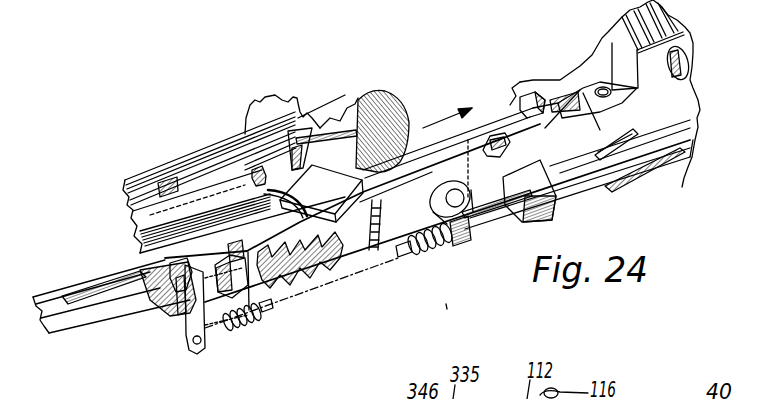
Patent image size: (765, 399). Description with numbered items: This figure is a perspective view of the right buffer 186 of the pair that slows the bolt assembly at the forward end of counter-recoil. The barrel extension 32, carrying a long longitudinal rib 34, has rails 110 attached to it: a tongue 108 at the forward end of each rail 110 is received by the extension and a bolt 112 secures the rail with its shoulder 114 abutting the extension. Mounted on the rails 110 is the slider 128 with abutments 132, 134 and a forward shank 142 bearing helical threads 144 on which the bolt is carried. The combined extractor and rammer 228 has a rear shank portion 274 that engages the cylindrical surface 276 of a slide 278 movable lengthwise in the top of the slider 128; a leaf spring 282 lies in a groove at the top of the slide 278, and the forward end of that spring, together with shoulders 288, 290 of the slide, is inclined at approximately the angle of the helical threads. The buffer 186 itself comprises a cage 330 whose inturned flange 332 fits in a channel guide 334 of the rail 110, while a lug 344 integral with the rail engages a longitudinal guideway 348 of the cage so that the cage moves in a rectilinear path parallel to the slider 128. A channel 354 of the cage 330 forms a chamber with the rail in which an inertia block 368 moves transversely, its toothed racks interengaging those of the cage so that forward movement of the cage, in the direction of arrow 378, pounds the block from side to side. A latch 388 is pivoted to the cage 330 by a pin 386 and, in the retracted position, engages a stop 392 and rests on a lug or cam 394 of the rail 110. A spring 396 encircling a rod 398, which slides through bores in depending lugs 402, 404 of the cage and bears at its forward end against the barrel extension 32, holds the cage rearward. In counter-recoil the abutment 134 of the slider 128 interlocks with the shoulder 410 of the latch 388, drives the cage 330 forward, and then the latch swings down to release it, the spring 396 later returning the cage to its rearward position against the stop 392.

The barrel extension 32 is at (683, 115).
The long longitudinal rib 34 is at (690, 163).
The tongue 108 is at (622, 153).
The rail 110 is at (70, 290).
The bolt 112 is at (603, 113).
The shoulder 114 is at (638, 127).
The slider 128 is at (143, 219).
The abutment 132 is at (296, 99).
The abutment 134 is at (321, 193).
The forward shank 142 is at (322, 124).
The helical threads 144 is at (355, 104).
The buffer 186 is at (407, 90).
The combined extractor and rammer 228 is at (338, 120).
The rear shank portion 274 is at (307, 136).
The cylindrical surface 276 is at (283, 168).
The slide 278 is at (248, 176).
The leaf spring 282 is at (182, 180).
The shoulder 288 is at (302, 162).
The shoulder 290 is at (253, 176).
The cage 330 is at (253, 283).
The inturned flange 332 is at (183, 315).
The channel guide 334 is at (174, 283).
The lug 344 is at (168, 306).
The longitudinal guideway 348 is at (232, 280).
The channel 354 is at (377, 201).
The inertia block 368 is at (320, 270).
The arrow 378 is at (443, 117).
The pin 386 is at (455, 247).
The latch 388 is at (497, 134).
The stop 392 is at (473, 152).
The lug or cam 394 is at (513, 188).
The spring 396 is at (433, 245).
The rod 398 is at (399, 257).
The depending lug 402 is at (209, 355).
The depending lug 404 is at (455, 205).
The shoulder 410 is at (527, 117).